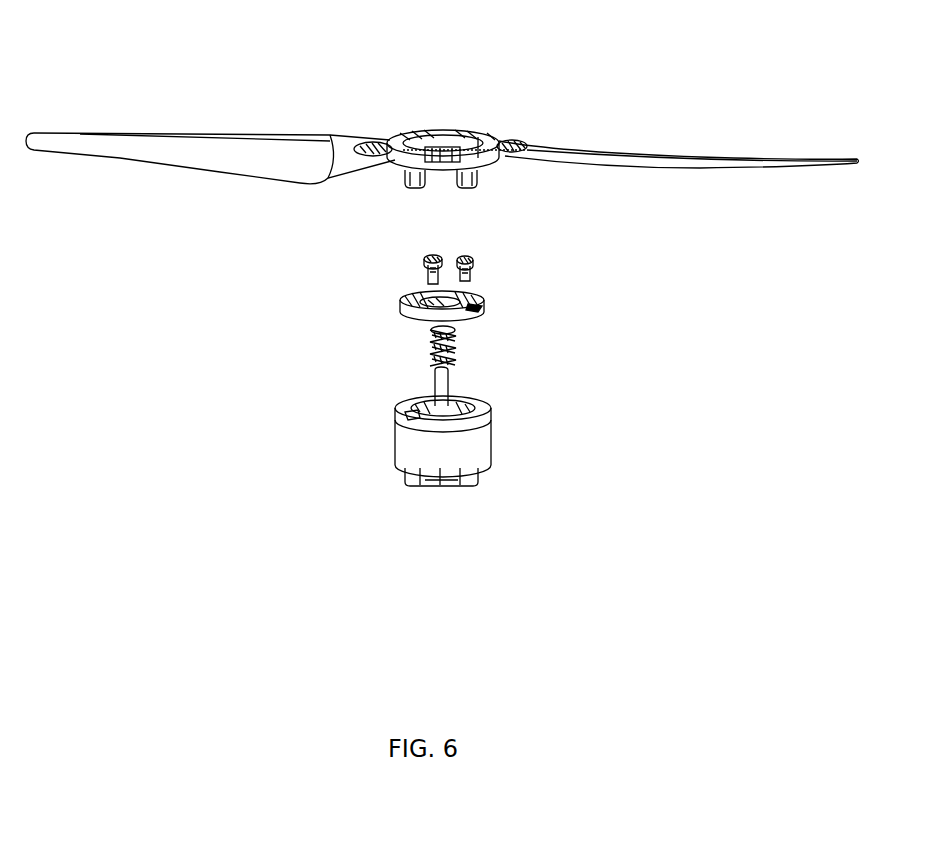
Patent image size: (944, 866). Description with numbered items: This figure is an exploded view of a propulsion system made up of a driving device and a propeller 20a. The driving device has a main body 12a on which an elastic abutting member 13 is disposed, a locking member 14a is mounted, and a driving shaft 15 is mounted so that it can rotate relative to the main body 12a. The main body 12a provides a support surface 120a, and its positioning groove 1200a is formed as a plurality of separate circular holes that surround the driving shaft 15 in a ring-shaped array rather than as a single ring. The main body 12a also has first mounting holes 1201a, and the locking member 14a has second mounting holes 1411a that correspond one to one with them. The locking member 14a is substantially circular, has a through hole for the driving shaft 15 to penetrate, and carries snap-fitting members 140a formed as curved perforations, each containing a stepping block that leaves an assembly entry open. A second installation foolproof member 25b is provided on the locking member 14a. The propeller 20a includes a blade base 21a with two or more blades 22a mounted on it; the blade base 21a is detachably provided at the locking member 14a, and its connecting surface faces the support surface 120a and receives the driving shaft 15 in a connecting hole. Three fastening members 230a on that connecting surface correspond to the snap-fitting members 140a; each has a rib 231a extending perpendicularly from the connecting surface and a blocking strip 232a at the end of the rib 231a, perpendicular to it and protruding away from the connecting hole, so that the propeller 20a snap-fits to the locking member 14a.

The propeller 20a is at (163, 40).
The blade base 21a is at (410, 133).
The blade 22a is at (225, 157).
The fastening member 230a is at (713, 188).
The rib 231a is at (478, 172).
The blocking strip 232a is at (470, 178).
The second installation foolproof member 25b is at (483, 300).
The locking member 14a is at (403, 312).
The snap-fitting member 140a is at (403, 302).
The second mounting hole 1411a is at (482, 306).
The elastic abutting member 13 is at (443, 348).
The driving shaft 15 is at (443, 388).
The main body 12a is at (405, 448).
The support surface 120a is at (403, 403).
The first mounting hole 1201a is at (490, 412).
The positioning groove 1200a is at (490, 430).